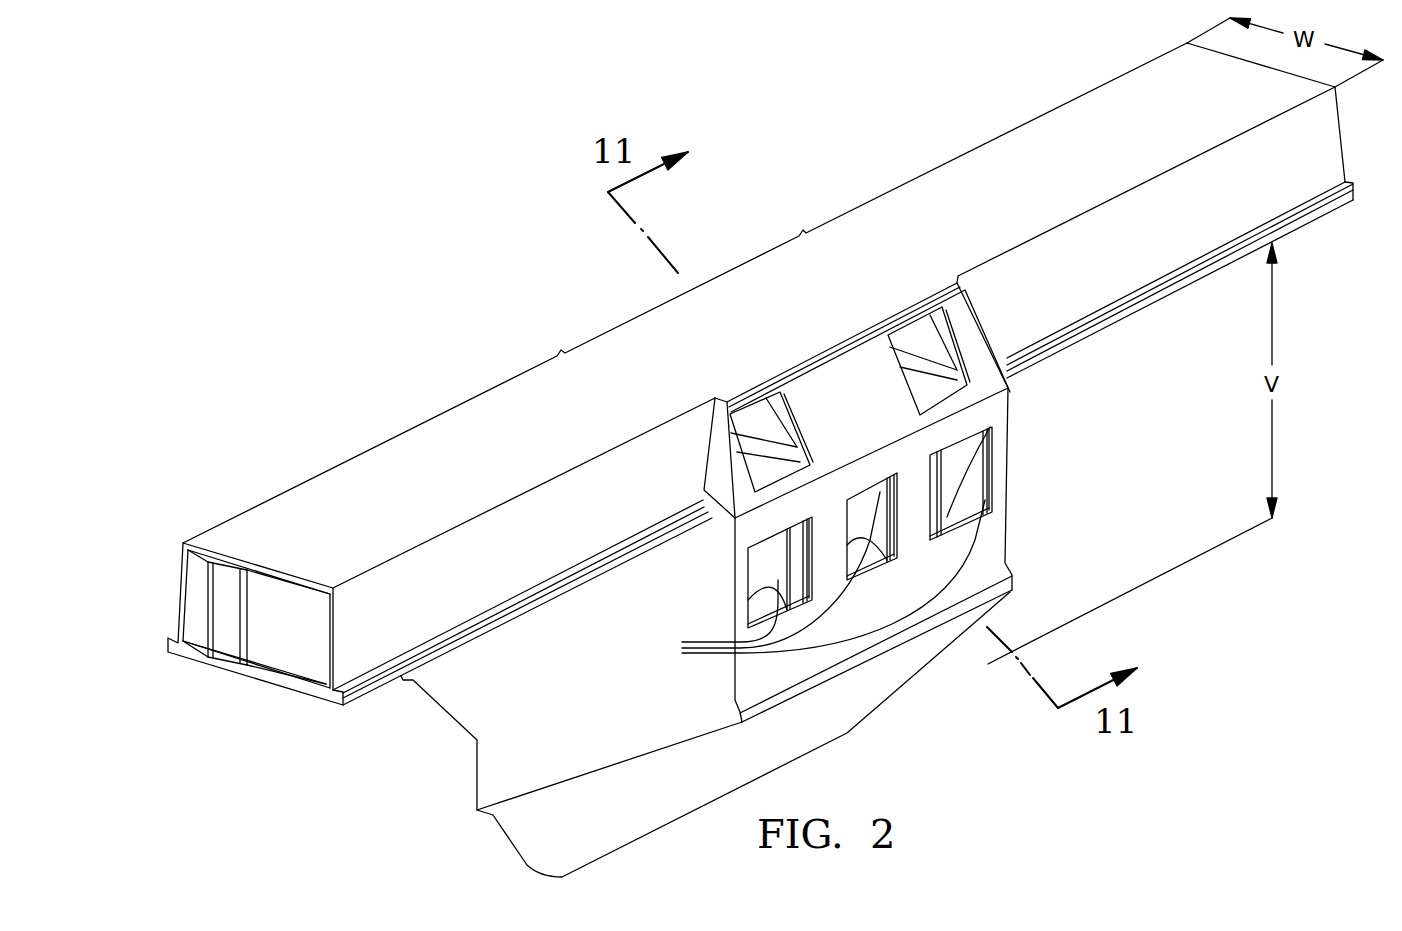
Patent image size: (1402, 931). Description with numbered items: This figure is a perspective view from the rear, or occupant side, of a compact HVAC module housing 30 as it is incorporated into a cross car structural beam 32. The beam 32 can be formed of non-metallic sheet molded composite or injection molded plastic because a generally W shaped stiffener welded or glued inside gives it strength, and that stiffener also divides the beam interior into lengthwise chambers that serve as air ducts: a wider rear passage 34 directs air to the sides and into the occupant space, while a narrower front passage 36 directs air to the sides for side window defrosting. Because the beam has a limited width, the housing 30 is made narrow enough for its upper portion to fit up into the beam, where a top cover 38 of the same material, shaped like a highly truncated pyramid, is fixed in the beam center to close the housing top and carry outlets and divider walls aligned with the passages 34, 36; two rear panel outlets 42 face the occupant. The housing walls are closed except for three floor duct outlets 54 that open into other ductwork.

The HVAC module housing 30 is at (1020, 508).
The cross car structural beam 32 is at (864, 200).
The rear passage 34 is at (292, 610).
The front passage 36 is at (198, 598).
The top cover 38 is at (1020, 380).
The rear panel outlets 42 is at (917, 388).
The floor duct outlets 54 is at (817, 577).